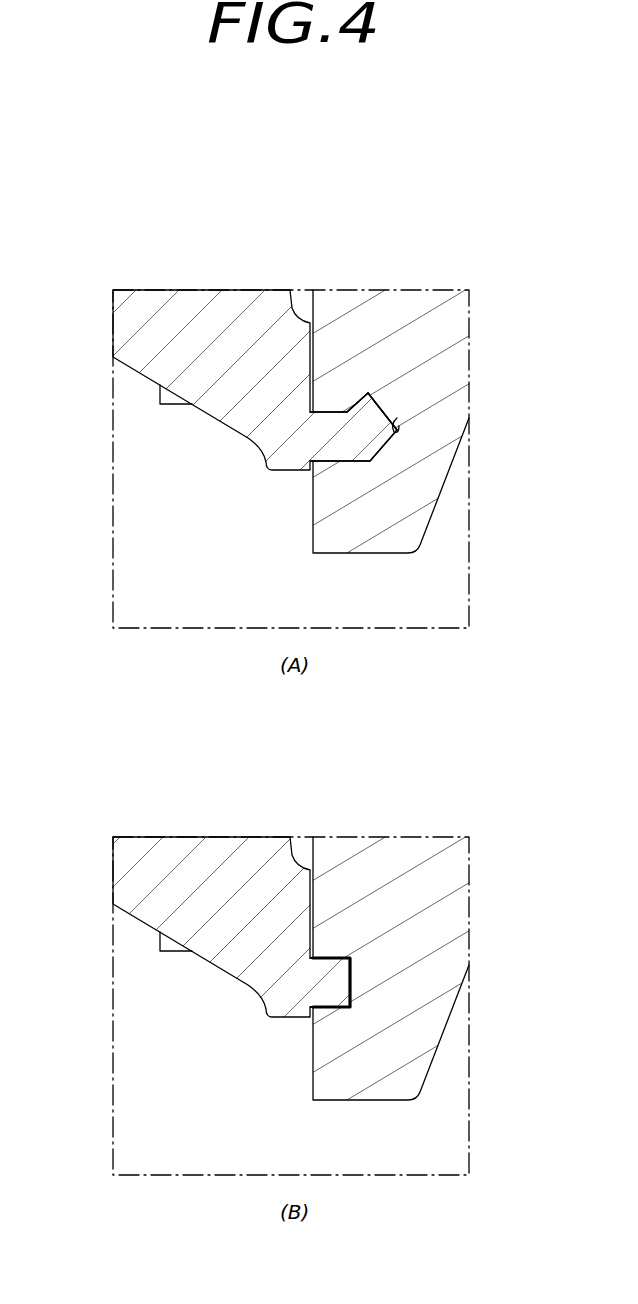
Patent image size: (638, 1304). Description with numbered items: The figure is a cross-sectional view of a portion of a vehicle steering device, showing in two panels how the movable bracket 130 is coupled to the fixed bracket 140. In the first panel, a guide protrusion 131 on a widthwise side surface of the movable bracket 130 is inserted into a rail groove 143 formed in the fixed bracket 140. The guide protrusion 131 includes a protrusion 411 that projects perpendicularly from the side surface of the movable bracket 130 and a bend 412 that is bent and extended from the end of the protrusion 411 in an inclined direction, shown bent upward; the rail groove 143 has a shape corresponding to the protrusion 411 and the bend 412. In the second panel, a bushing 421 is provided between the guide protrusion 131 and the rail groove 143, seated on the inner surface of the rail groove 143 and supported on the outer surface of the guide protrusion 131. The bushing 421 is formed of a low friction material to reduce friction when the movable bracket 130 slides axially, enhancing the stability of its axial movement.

The movable bracket 130 is at (152, 303).
The guide protrusion 131 is at (391, 231).
The protrusion 411 is at (330, 422).
The bend 412 is at (378, 423).
The fixed bracket 140 is at (437, 303).
The rail groove 143 is at (397, 418).
The bushing 421 is at (344, 958).